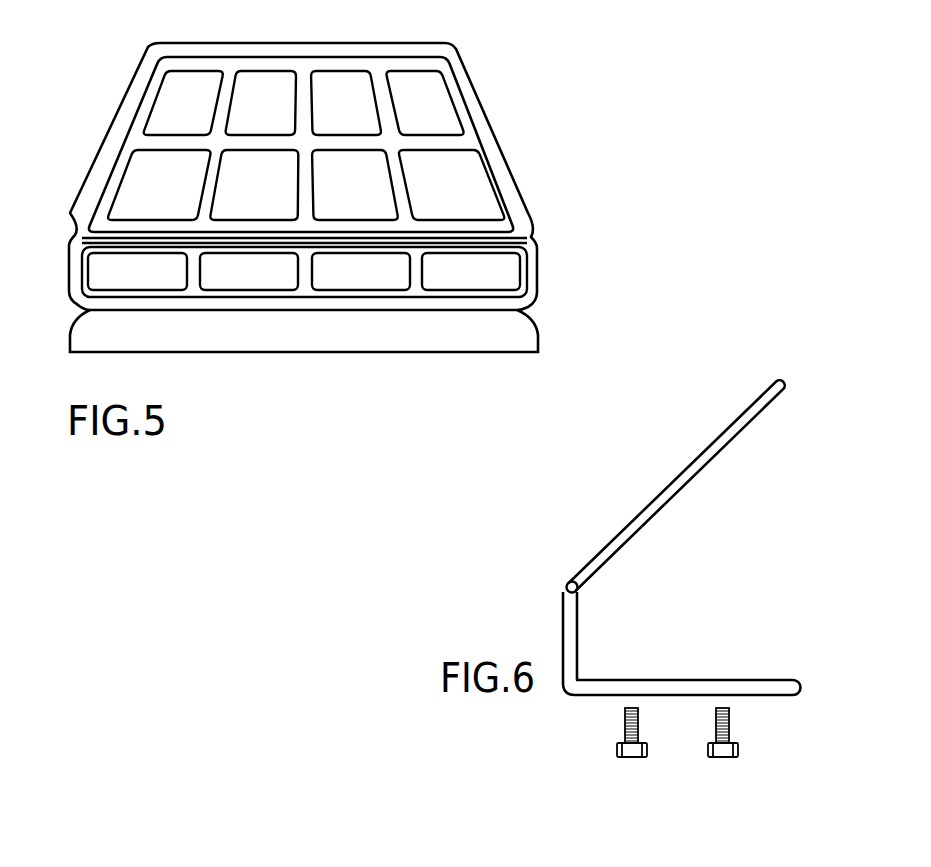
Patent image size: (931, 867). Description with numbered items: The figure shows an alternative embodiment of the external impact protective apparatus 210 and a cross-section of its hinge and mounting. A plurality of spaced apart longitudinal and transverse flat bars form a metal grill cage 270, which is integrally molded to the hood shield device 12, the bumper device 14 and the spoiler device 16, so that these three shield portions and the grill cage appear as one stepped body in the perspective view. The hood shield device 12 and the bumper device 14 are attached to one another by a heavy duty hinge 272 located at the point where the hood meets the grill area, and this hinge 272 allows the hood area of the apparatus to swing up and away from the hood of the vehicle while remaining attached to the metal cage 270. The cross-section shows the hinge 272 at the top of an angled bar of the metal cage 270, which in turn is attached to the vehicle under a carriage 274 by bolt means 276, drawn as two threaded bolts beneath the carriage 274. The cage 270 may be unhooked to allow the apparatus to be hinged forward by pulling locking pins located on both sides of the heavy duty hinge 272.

In FIG. 5, the external impact protective apparatus 210 is at (514, 52).
In FIG. 5, the hood shield device 12 is at (488, 100).
In FIG. 5, the bumper device 14 is at (543, 270).
In FIG. 5, the spoiler device 16 is at (537, 332).
In FIG. 5, the metal grill cage 270 is at (151, 105).
In FIG. 6, the metal grill cage 270 is at (677, 472).
In FIG. 5, the heavy duty hinge 272 is at (505, 238).
In FIG. 6, the heavy duty hinge 272 is at (566, 586).
In FIG. 6, the carriage 274 is at (777, 679).
In FIG. 6, the bolt means 276 is at (716, 786).